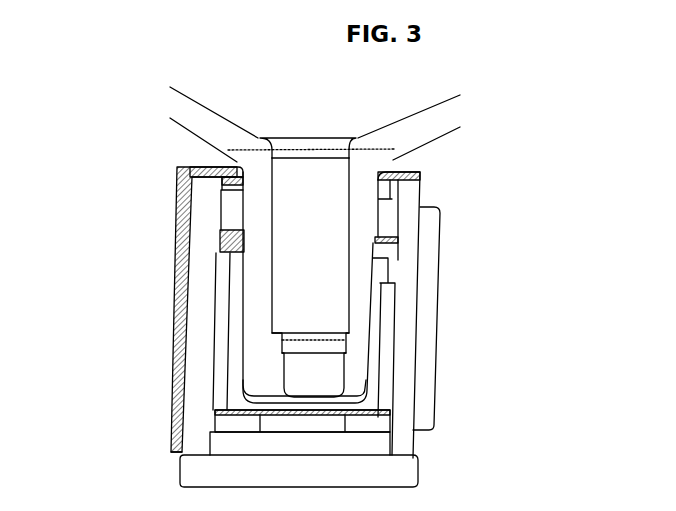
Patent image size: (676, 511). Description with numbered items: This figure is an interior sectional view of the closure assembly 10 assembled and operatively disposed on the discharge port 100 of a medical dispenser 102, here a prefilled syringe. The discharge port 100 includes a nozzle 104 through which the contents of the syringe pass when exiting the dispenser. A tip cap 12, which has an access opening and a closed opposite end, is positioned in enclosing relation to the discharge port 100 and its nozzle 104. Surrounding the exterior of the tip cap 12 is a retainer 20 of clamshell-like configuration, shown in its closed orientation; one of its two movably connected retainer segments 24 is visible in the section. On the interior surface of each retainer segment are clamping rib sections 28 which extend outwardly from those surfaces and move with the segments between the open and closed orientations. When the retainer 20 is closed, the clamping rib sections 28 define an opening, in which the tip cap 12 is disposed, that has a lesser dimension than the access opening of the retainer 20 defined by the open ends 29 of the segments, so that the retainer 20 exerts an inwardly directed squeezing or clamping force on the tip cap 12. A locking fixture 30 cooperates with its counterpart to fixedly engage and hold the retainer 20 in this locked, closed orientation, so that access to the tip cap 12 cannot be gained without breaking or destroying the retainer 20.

The closure assembly 10 is at (498, 237).
The tip cap 12 is at (240, 298).
The retainer 20 is at (138, 230).
The retainer segment 24 is at (405, 398).
The clamping rib section 28 is at (232, 270).
The open end 29 is at (236, 167).
The locking fixture 30 is at (441, 208).
The discharge port 100 is at (256, 170).
The medical dispenser 102 is at (197, 99).
The nozzle 104 is at (262, 343).